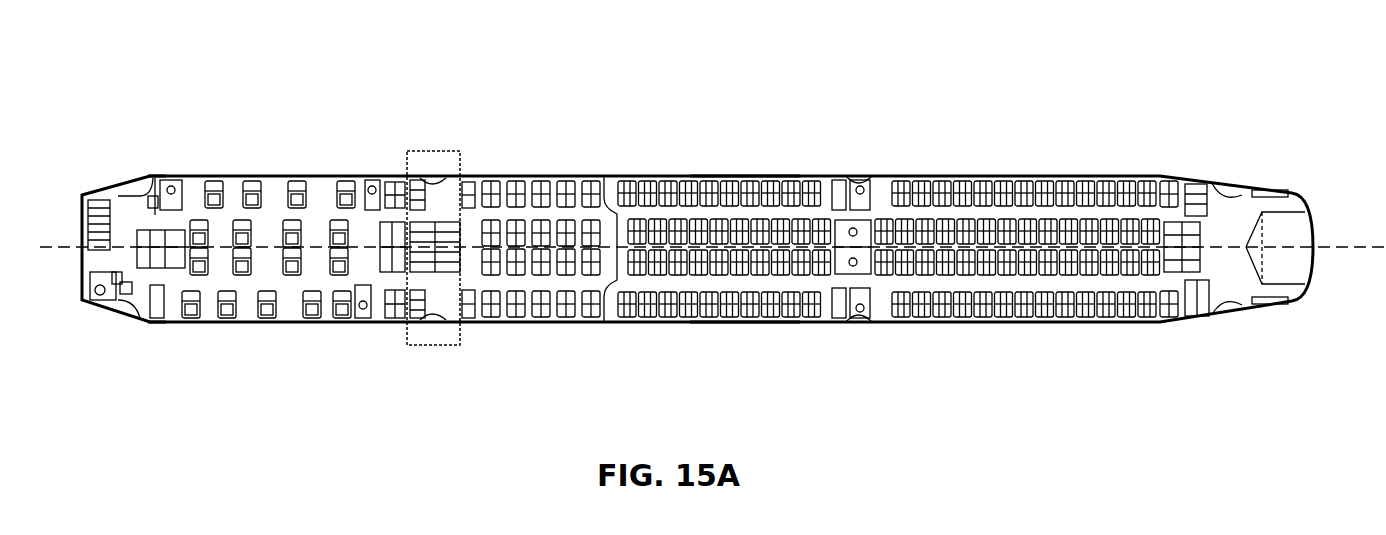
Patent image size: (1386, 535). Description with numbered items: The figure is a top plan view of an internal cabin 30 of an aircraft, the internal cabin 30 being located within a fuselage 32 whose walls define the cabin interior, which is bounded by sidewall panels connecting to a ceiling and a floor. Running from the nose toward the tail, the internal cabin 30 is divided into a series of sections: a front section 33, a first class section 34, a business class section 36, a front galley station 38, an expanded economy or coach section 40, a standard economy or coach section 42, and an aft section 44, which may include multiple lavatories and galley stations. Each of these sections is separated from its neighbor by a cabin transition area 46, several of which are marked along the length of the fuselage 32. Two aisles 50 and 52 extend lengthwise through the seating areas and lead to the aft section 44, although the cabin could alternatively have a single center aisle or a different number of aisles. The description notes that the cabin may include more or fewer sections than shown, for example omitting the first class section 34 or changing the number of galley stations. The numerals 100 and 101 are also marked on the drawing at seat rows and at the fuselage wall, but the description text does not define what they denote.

The internal cabin 30 is at (219, 77).
The fuselage 32 is at (556, 134).
The front section 33 is at (143, 335).
The first class section 34 is at (238, 321).
The business class section 36 is at (305, 177).
The front galley station 38 is at (433, 345).
The expanded economy or coach section 40 is at (535, 323).
The standard economy or coach section 42 is at (665, 177).
The aft section 44 is at (1236, 203).
The cabin transition area 46 is at (150, 177).
The aisle 50 is at (1028, 212).
The aisle 52 is at (1046, 282).
The seat rows 100 is at (790, 176).
The fuselage wall portion 101 is at (778, 170).